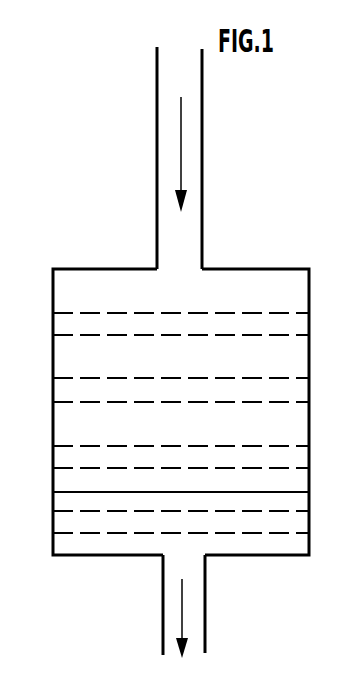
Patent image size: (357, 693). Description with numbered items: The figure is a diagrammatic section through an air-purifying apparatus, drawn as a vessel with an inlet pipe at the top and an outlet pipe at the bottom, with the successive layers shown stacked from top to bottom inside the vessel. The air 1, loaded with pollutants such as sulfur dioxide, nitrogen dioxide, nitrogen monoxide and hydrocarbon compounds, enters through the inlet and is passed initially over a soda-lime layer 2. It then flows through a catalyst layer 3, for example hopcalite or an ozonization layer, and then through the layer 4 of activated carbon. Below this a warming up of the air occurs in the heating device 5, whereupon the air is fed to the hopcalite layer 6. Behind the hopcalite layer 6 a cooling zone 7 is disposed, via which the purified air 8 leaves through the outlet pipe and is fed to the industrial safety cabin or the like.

The air 1 is at (190, 151).
The soda-lime layer 2 is at (70, 323).
The catalyst layer 3 is at (70, 390).
The layer of activated carbon 4 is at (73, 461).
The heating device 5 is at (75, 492).
The hopcalite layer 6 is at (75, 522).
The cooling zone 7 is at (75, 545).
The purified air 8 is at (192, 614).